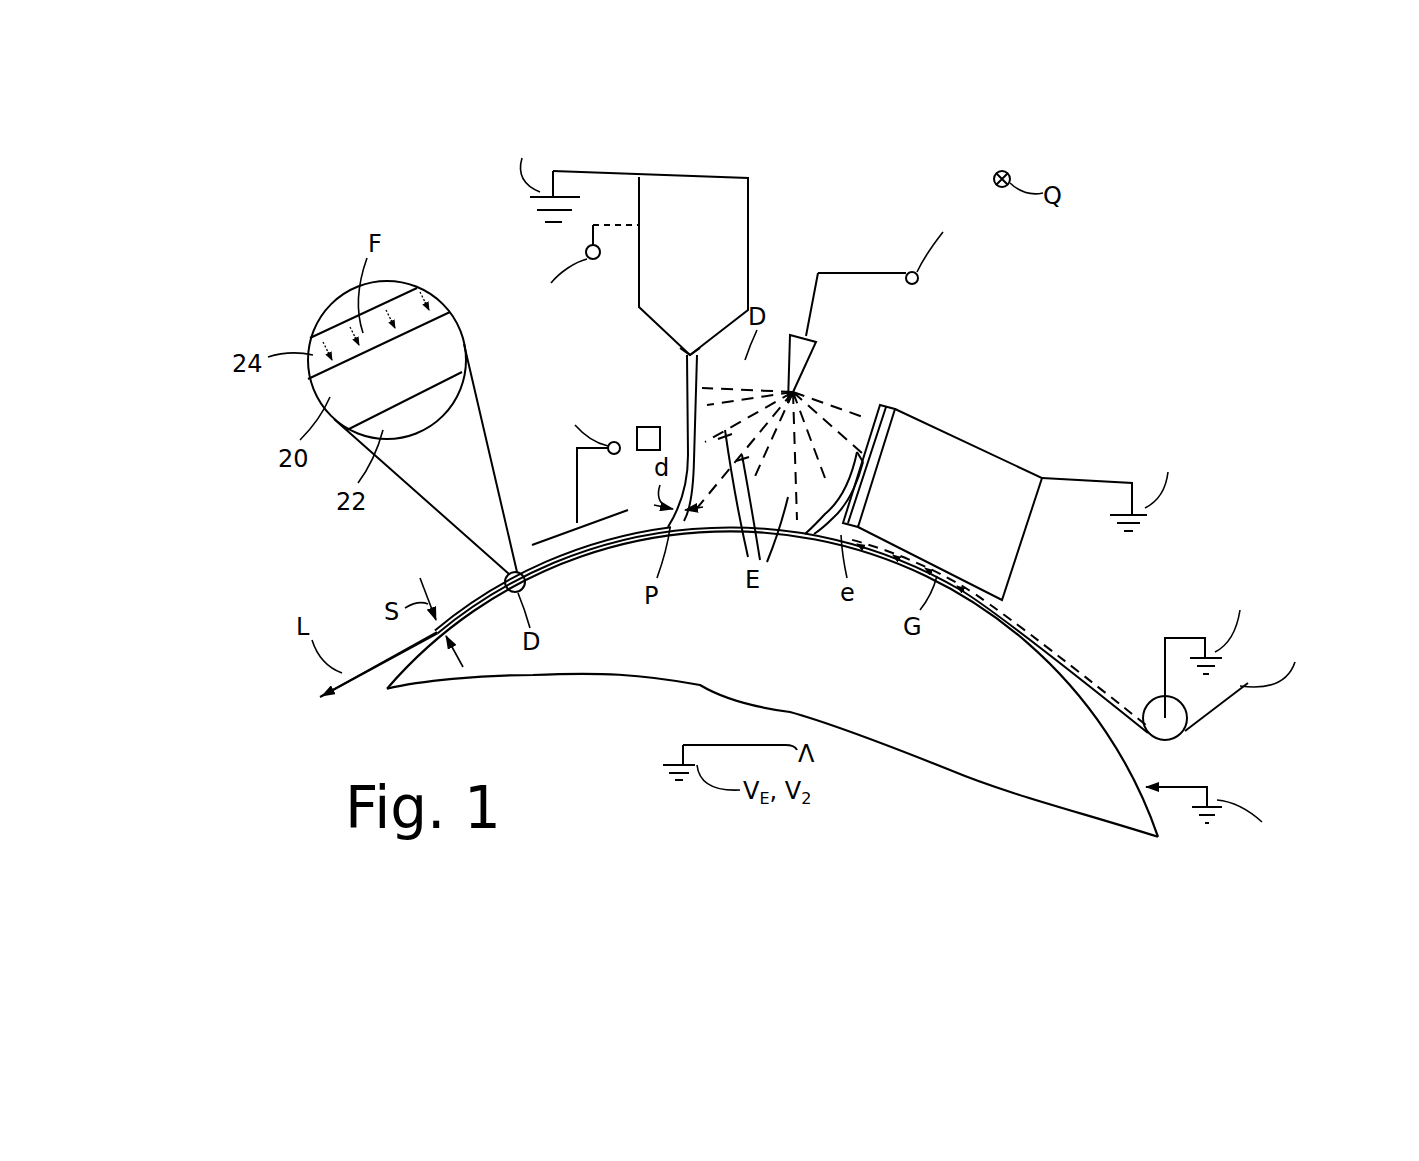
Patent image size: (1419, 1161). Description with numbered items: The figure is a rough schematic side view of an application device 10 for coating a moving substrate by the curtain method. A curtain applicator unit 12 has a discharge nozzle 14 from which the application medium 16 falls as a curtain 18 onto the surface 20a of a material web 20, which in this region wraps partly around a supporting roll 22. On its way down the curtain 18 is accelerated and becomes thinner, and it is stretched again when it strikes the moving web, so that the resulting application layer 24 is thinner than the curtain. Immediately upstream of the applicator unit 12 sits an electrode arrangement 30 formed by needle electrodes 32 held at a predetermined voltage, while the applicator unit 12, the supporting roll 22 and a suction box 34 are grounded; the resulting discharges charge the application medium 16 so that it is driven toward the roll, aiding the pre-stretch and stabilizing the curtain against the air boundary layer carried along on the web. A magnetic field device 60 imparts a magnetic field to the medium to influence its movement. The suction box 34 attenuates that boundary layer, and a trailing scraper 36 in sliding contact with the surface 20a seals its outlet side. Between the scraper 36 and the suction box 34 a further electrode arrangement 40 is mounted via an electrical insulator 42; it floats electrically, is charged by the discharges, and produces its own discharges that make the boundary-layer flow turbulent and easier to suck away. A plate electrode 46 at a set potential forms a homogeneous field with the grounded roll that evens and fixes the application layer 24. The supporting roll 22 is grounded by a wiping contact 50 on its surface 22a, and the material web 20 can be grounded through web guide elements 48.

The application device 10 is at (1165, 240).
The curtain applicator unit 12 is at (740, 223).
The discharge nozzle 14 is at (688, 350).
The application medium 16 is at (743, 362).
The curtain 18 is at (688, 408).
The material web 20 is at (1065, 669).
The surface of the material web 20a is at (1022, 631).
The supporting roll 22 is at (935, 738).
The surface of the roll 22a is at (1160, 836).
The application layer 24 is at (380, 657).
The electrode arrangement 30 is at (805, 348).
The needle electrodes 32 is at (802, 362).
The suction box 34 is at (993, 473).
The trailing scraper 36 is at (827, 532).
The further electrode arrangement 40 is at (887, 403).
The electrical insulator 42 is at (890, 437).
The plate electrode 46 is at (557, 527).
The web guide elements 48 is at (1152, 708).
The wiping contact 50 is at (1190, 787).
The magnetic field device 60 is at (633, 428).